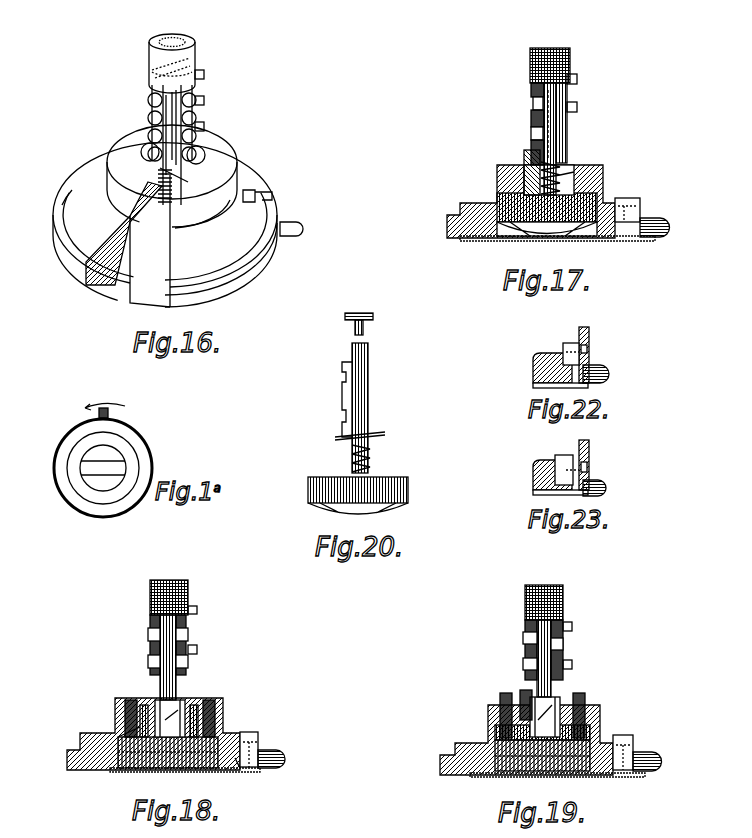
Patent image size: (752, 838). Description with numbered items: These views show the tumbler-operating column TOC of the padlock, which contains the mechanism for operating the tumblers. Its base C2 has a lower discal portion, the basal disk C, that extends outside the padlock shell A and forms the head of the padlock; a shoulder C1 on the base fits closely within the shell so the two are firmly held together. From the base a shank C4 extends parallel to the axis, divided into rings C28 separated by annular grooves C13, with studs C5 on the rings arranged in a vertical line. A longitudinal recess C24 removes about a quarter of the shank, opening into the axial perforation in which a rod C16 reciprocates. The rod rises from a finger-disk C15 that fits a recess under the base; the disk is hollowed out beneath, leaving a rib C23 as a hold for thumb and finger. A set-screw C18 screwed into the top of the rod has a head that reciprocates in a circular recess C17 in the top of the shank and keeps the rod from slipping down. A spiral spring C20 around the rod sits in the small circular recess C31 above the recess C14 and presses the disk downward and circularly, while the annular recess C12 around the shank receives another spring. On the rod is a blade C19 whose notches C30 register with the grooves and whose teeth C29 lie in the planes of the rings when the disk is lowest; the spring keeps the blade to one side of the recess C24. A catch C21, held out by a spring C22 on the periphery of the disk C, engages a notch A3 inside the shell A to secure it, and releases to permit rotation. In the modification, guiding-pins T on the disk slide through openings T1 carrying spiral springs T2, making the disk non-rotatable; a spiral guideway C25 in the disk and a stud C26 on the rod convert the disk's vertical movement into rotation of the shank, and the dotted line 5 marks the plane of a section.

In FIG. 16, the base or basal disk C is at (268, 258).
In FIG. 17, the base or basal disk C is at (452, 222).
In FIG. 1A, the base or basal disk C is at (143, 458).
In FIG. 18, the base or basal disk C is at (67, 752).
In FIG. 19, the base or basal disk C is at (448, 760).
In FIG. 16, the shoulder C1 is at (62, 205).
In FIG. 17, the shoulder C1 is at (460, 205).
In FIG. 18, the shoulder C1 is at (86, 735).
In FIG. 19, the shoulder C1 is at (470, 745).
In FIG. 16, the base of the column C2 is at (196, 176).
In FIG. 17, the base of the column C2 is at (500, 178).
In FIG. 18, the base of the column C2 is at (220, 708).
In FIG. 19, the base of the column C2 is at (596, 714).
In FIG. 16, the shank C4 is at (184, 64).
In FIG. 17, the shank C4 is at (530, 64).
In FIG. 18, the shank C4 is at (150, 596).
In FIG. 19, the shank C4 is at (563, 600).
In FIG. 16, the stud C5 is at (204, 75).
In FIG. 17, the stud C5 is at (578, 78).
In FIG. 18, the stud C5 is at (197, 652).
In FIG. 19, the stud C5 is at (572, 626).
In FIG. 16, the annular recess C12 is at (148, 162).
In FIG. 17, the annular recess C12 is at (528, 162).
In FIG. 18, the annular recess C12 is at (157, 700).
In FIG. 19, the annular recess C12 is at (524, 692).
In FIG. 17, the annular grooves C13 is at (533, 92).
In FIG. 17, the recess C14 is at (510, 232).
In FIG. 17, the finger-disk C15 is at (562, 222).
In FIG. 20, the finger-disk C15 is at (330, 488).
In FIG. 1A, the finger-disk C15 is at (112, 456).
In FIG. 18, the finger-disk C15 is at (188, 598).
In FIG. 17, the rod C16 is at (562, 152).
In FIG. 20, the rod C16 is at (360, 368).
In FIG. 16, the circular recess C17 is at (160, 44).
In FIG. 16, the set-screw C18 is at (160, 62).
In FIG. 20, the set-screw C18 is at (345, 317).
In FIG. 18, the set-screw C18 is at (150, 618).
In FIG. 16, the blade C19 is at (176, 110).
In FIG. 17, the blade C19 is at (556, 134).
In FIG. 20, the blade C19 is at (342, 392).
In FIG. 16, the spiral spring C20 is at (222, 150).
In FIG. 17, the spiral spring C20 is at (576, 173).
In FIG. 20, the spiral spring C20 is at (385, 434).
In FIG. 16, the catch C21 is at (264, 199).
In FIG. 17, the catch C21 is at (632, 212).
In FIG. 1A, the catch C21 is at (110, 412).
In FIG. 22, the catch C21 is at (568, 345).
In FIG. 23, the catch C21 is at (566, 460).
In FIG. 18, the catch C21 is at (255, 745).
In FIG. 19, the catch C21 is at (630, 752).
In FIG. 16, the spring C22 is at (190, 236).
In FIG. 17, the rib C23 is at (548, 228).
In FIG. 20, the rib C23 is at (370, 512).
In FIG. 16, the longitudinal recess C24 is at (185, 106).
In FIG. 17, the longitudinal recess C24 is at (562, 100).
In FIG. 18, the longitudinal recess C24 is at (152, 652).
In FIG. 19, the longitudinal recess C24 is at (560, 660).
In FIG. 18, the spiral guideway C25 is at (165, 768).
In FIG. 19, the spiral guideway C25 is at (545, 770).
In FIG. 18, the pin or stud C26 is at (200, 768).
In FIG. 19, the pin or stud C26 is at (505, 772).
In FIG. 17, the rings C28 is at (531, 132).
In FIG. 20, the teeth or projections C29 is at (342, 372).
In FIG. 20, the notches C30 is at (342, 414).
In FIG. 17, the small circular recess C31 is at (598, 164).
In FIG. 22, the padlock shell A is at (589, 330).
In FIG. 23, the padlock shell A is at (589, 462).
In FIG. 22, the notch A3 is at (587, 348).
In FIG. 23, the notch A3 is at (589, 448).
In FIG. 18, the guiding-pins T is at (128, 700).
In FIG. 19, the guiding-pins T is at (502, 694).
In FIG. 18, the opening T1 is at (143, 704).
In FIG. 18, the spiral spring T2 is at (128, 770).
In FIG. 18, the dotted line 5 is at (88, 605).
In FIG. 16, the tumbler-operating column TOC is at (76, 105).
In FIG. 17, the tumbler-operating column TOC is at (444, 105).
In FIG. 18, the tumbler-operating column TOC is at (76, 639).
In FIG. 19, the tumbler-operating column TOC is at (476, 643).